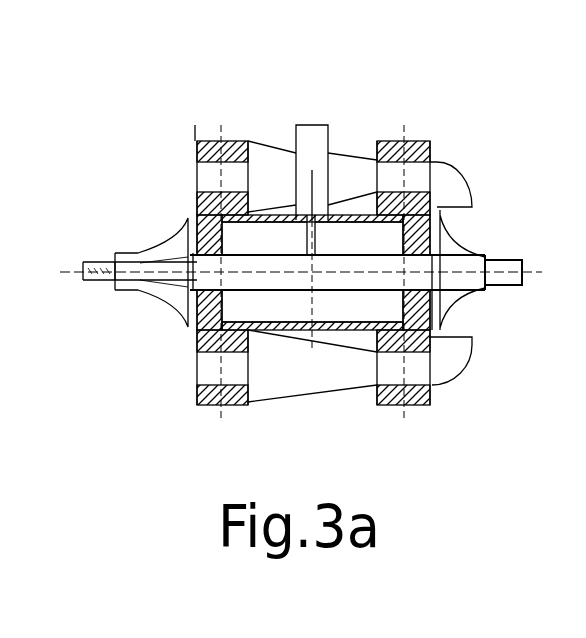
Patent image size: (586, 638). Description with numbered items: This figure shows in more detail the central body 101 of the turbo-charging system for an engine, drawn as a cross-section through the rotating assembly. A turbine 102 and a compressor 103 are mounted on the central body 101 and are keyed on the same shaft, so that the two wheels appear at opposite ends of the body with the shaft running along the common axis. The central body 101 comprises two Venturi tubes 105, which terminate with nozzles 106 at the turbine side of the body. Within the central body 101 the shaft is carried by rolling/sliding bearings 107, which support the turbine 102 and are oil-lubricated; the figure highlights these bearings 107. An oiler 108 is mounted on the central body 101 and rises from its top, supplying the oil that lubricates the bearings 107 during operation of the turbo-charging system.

The central body 101 is at (223, 140).
The turbine 102 is at (487, 257).
The compressor 103 is at (137, 255).
The Venturi tubes 105 is at (317, 395).
The nozzles 106 is at (472, 207).
The rolling/sliding bearings 107 is at (372, 258).
The oiler 108 is at (313, 125).